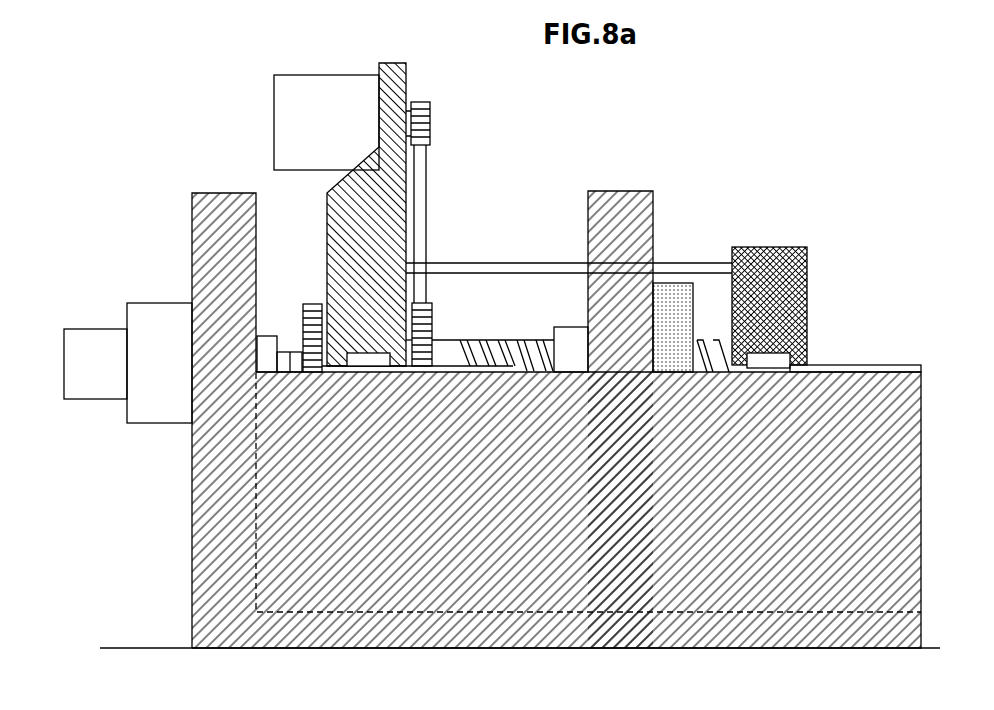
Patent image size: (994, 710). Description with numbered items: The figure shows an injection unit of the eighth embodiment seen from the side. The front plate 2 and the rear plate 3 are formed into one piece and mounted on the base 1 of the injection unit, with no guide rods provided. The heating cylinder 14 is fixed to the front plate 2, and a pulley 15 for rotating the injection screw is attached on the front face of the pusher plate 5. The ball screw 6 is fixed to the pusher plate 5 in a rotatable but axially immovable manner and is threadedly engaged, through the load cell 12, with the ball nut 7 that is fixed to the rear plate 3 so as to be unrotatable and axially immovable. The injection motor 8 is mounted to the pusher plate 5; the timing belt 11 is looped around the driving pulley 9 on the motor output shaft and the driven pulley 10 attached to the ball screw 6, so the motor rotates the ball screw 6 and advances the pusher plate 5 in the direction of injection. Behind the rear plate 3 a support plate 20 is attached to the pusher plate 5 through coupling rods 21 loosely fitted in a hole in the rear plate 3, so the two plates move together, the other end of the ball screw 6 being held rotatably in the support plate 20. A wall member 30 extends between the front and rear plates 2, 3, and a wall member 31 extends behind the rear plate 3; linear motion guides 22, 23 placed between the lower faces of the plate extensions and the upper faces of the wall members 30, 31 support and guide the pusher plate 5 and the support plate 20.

The base 1 is at (127, 647).
The front plate 2 is at (212, 193).
The rear plate 3 is at (598, 192).
The pusher plate 5 is at (327, 193).
The ball screw 6 is at (475, 342).
The ball nut 7 is at (582, 328).
The injection motor 8 is at (303, 76).
The driving pulley 9 is at (430, 113).
The driven pulley 10 is at (433, 315).
The timing belt 11 is at (424, 207).
The load cell 12 is at (682, 288).
The heating cylinder 14 is at (96, 329).
The pulley 15 is at (313, 305).
The support plate 20 is at (773, 250).
The coupling rods 21 is at (706, 263).
The linear motion guides 22 is at (348, 367).
The linear motion guides 23 is at (786, 379).
The wall member 30 is at (265, 490).
The wall member 31 is at (800, 593).